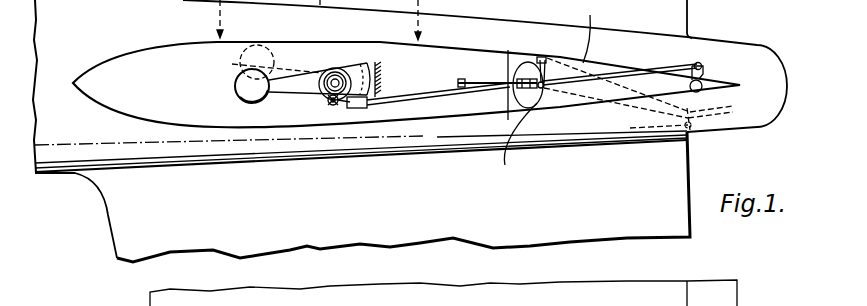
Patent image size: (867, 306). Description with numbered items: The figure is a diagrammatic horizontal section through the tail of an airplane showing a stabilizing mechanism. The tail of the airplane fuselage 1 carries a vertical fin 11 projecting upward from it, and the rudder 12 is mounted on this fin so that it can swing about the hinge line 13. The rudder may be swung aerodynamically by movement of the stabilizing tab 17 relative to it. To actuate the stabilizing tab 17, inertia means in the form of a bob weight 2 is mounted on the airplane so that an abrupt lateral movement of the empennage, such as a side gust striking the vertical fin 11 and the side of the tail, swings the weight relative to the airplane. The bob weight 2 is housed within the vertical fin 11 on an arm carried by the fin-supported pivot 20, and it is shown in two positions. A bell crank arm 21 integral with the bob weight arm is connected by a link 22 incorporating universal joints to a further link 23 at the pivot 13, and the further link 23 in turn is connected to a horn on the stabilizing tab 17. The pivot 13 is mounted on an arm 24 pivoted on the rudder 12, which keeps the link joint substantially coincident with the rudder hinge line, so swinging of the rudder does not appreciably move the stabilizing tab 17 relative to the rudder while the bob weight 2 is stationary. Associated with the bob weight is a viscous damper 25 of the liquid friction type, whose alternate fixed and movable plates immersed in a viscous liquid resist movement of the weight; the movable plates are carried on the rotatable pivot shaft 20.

The airplane fuselage 1 is at (90, 42).
The bob weight 2 is at (240, 63).
The vertical fin 11 is at (140, 98).
The rudder 12 is at (598, 300).
The hinge line / pivot 13 is at (520, 140).
The stabilizing tab 17 is at (712, 83).
The pivot 20 is at (338, 76).
The bell crank arm 21 is at (330, 100).
The link 22 is at (424, 93).
The further link 23 is at (653, 71).
The arm 24 is at (533, 60).
The viscous damper 25 is at (330, 72).